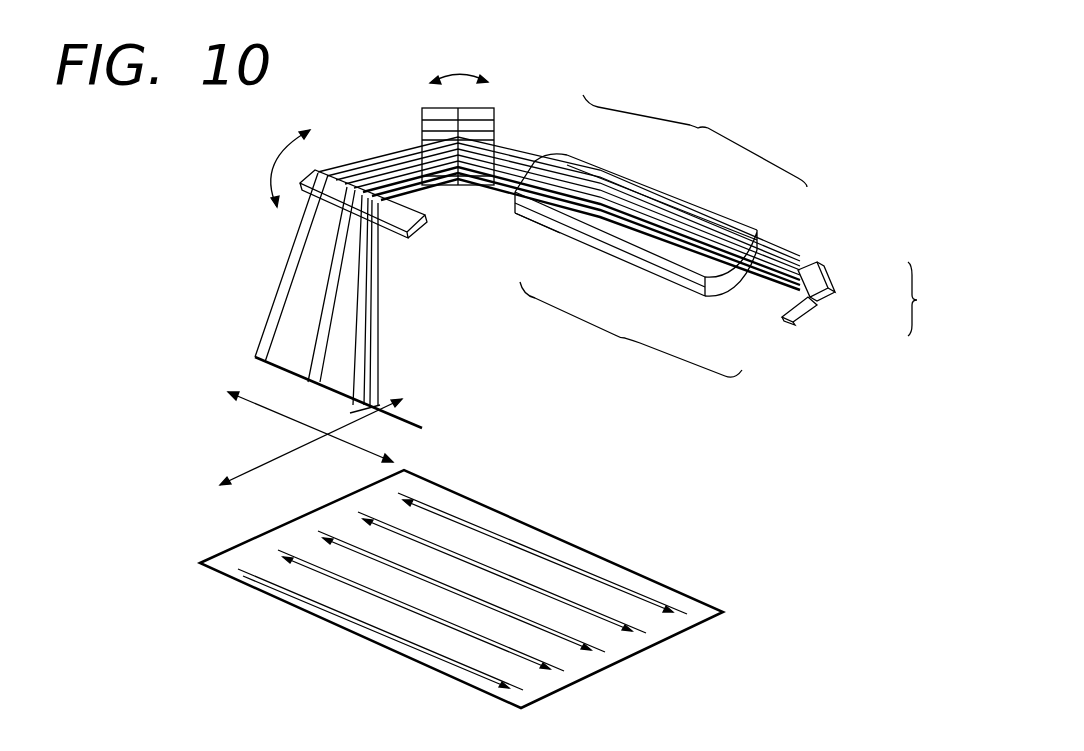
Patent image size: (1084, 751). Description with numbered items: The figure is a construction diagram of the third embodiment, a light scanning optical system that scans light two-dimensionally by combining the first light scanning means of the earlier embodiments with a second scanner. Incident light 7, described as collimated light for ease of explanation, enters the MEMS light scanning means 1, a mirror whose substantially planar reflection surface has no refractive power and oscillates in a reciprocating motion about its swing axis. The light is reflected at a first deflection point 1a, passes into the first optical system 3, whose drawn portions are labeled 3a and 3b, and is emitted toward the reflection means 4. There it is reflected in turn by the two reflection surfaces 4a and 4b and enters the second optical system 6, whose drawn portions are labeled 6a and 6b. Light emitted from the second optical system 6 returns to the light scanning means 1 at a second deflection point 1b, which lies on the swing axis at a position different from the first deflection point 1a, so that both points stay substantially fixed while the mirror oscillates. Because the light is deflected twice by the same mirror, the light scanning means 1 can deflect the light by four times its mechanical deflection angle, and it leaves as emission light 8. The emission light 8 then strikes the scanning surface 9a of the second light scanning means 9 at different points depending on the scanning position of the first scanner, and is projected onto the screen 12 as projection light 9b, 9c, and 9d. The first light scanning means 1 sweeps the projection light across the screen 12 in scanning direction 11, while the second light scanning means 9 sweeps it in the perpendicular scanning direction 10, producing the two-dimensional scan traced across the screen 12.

The MEMS light scanning means 1 is at (490, 95).
The first deflection point 1a is at (485, 120).
The second deflection point 1b is at (477, 188).
The first optical system 3 is at (661, 191).
The lens incident surface 3a is at (575, 146).
The lens exit surface 3b is at (740, 212).
The reflection means 4 is at (858, 299).
The reflection surface 4a is at (822, 270).
The reflection surface 4b is at (822, 303).
The second optical system 6 is at (628, 284).
The holder end portion 6a is at (713, 298).
The holder end portion 6b is at (540, 232).
The incident light 7 is at (397, 153).
The emission light 8 is at (405, 238).
The second light scanning means 9 is at (300, 184).
The scanning surface 9a is at (426, 220).
The projection light 9b is at (293, 255).
The projection light 9c is at (322, 307).
The projection light 9d is at (380, 347).
The scanning direction 10 is at (247, 470).
The scanning direction 11 is at (253, 402).
The screen 12 is at (725, 613).